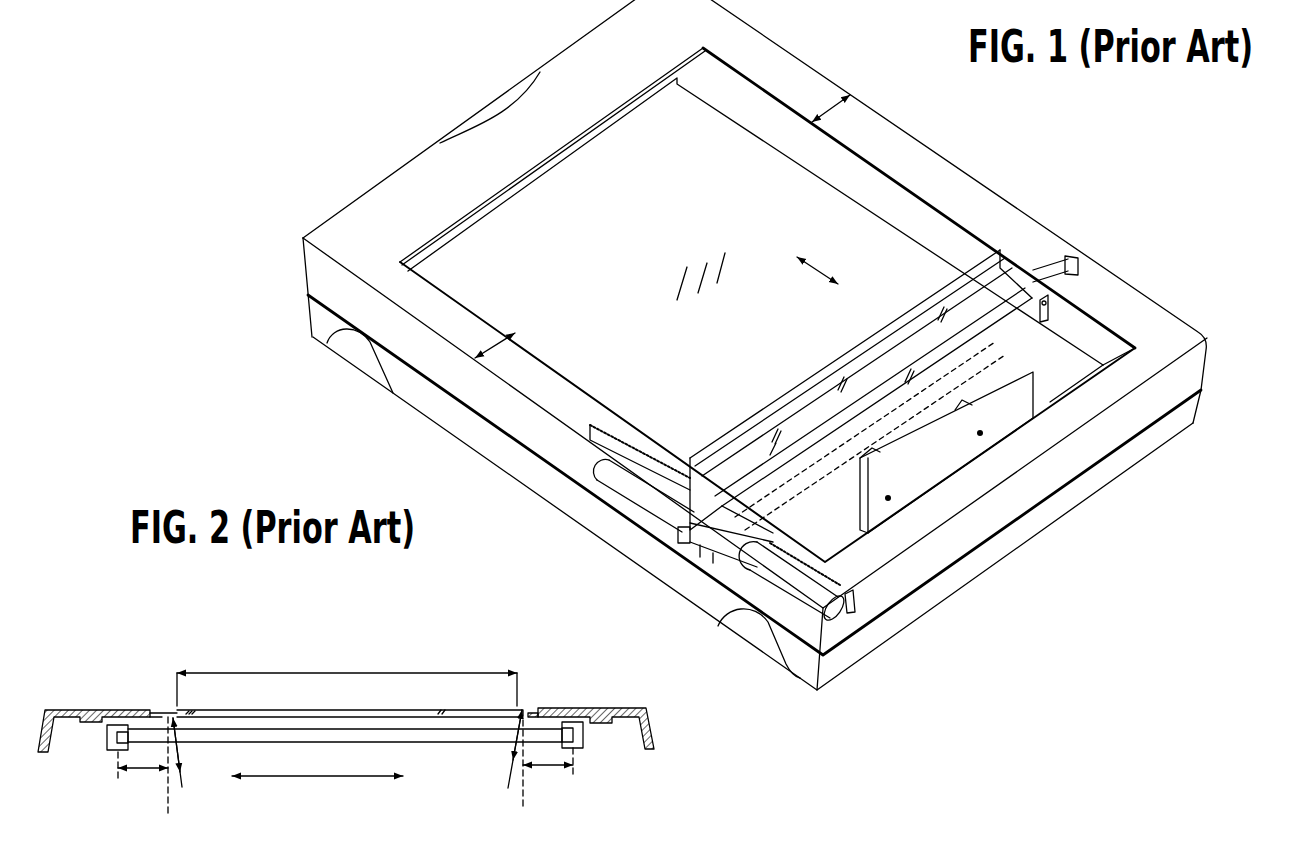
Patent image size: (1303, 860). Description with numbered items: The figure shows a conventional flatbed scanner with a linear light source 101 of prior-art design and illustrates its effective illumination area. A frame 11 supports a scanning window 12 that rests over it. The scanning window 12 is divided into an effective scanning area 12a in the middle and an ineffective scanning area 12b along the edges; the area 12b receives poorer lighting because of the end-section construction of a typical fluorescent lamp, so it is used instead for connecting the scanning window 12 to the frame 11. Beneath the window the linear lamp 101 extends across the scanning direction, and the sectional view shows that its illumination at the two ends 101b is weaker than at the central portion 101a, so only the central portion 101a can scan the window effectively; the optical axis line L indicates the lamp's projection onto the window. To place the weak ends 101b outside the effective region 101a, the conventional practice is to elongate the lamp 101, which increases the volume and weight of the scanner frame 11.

In FIG. 1, the frame 11 is at (1145, 313).
In FIG. 2, the frame 11 is at (596, 708).
In FIG. 1, the scanning window 12 is at (897, 272).
In FIG. 2, the scanning window 12 is at (360, 712).
In FIG. 1, the effective scanning area 12a is at (722, 252).
In FIG. 2, the effective scanning area 12a is at (347, 675).
In FIG. 1, the ineffective scanning area 12b is at (651, 217).
In FIG. 1, the linear light source 101 is at (1078, 250).
In FIG. 2, the linear light source 101 is at (268, 740).
In FIG. 2, the central portion 101a is at (317, 763).
In FIG. 2, the two ends 101b is at (345, 761).
In FIG. 2, the optical axis line of scanning module L is at (523, 767).